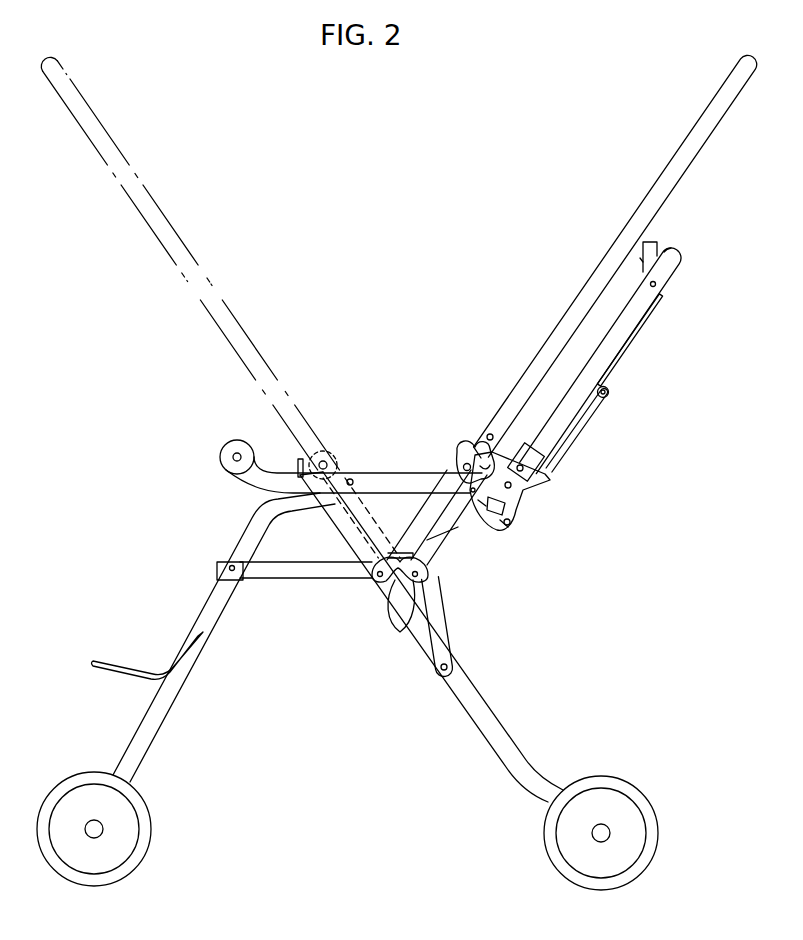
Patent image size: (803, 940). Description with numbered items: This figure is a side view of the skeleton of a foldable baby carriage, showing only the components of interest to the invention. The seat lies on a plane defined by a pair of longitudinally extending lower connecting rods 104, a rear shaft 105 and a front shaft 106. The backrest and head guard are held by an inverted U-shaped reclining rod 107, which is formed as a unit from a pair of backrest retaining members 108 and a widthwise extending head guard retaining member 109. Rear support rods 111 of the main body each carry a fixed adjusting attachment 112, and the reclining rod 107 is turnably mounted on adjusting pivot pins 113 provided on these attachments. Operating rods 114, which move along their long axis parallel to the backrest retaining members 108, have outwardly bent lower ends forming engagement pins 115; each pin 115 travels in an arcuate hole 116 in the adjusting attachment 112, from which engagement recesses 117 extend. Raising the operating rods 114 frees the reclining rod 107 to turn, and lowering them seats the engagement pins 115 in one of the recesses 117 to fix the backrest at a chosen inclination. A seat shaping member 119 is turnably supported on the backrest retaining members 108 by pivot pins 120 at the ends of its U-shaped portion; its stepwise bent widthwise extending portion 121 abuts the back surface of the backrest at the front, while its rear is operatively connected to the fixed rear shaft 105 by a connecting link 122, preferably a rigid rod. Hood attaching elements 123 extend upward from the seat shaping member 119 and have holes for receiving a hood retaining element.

The lower connecting rod 104 is at (295, 579).
The rear shaft 105 is at (399, 633).
The front shaft 106 is at (231, 565).
The reclining rod 107 is at (678, 251).
The backrest retaining member 108 is at (630, 322).
The head guard retaining member 109 is at (665, 249).
The rear support rod 111 is at (448, 530).
The adjusting attachment 112 is at (546, 488).
The adjusting pivot pin 113 is at (546, 476).
The operating rod 114 is at (628, 358).
The engagement pin 115 is at (512, 524).
The arcuate hole 116 is at (517, 495).
The engagement recess 117 is at (510, 528).
The seat shaping member 119 is at (634, 256).
The pivot pin 120 is at (657, 283).
The widthwise extending portion 121 is at (609, 388).
The connecting link 122 is at (598, 412).
The hood attaching element 123 is at (641, 258).